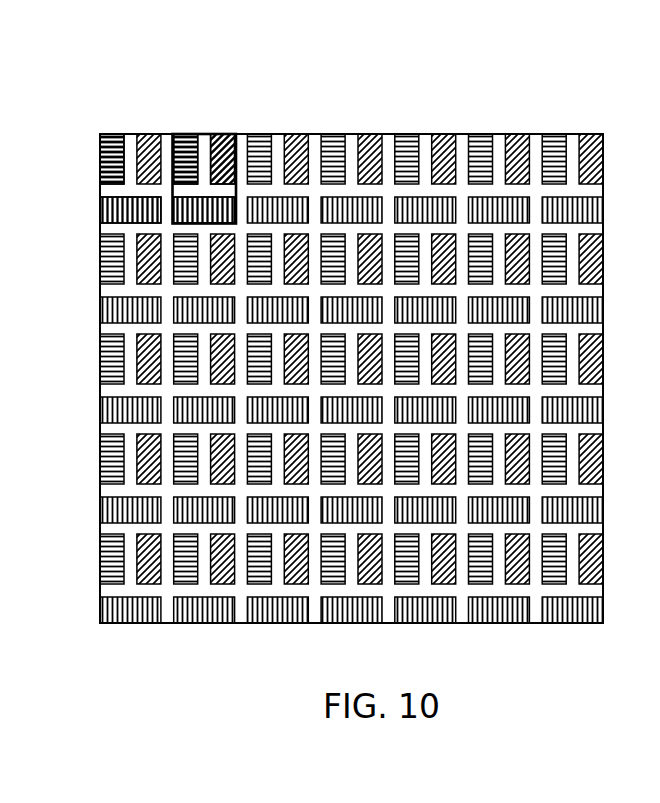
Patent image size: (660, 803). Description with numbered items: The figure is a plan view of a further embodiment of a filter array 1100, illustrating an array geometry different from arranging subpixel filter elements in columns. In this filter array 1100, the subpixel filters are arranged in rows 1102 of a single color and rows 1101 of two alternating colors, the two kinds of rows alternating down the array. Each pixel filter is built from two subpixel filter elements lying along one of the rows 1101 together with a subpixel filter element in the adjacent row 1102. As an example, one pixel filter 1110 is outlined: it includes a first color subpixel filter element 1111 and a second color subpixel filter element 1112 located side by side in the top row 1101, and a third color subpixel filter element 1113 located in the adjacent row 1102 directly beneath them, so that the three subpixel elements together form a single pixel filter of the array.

The filter array 1100 is at (110, 648).
The rows of two alternating colors 1101 is at (102, 162).
The rows of a single color 1102 is at (100, 208).
The pixel filter 1110 is at (207, 134).
The first color subpixel filter element 1111 is at (185, 157).
The second color subpixel filter element 1112 is at (228, 152).
The third color subpixel filter element 1113 is at (188, 210).